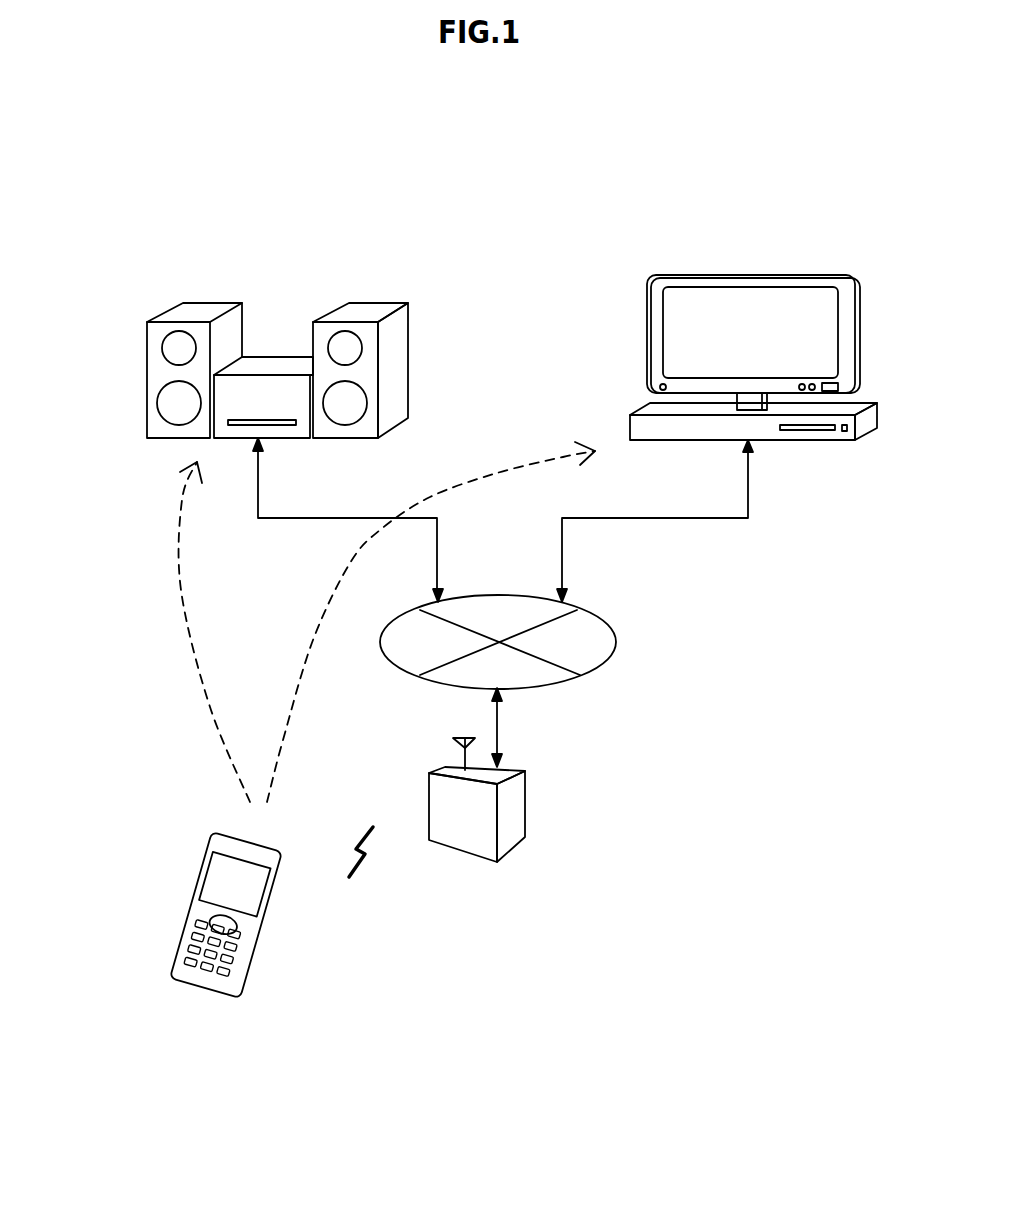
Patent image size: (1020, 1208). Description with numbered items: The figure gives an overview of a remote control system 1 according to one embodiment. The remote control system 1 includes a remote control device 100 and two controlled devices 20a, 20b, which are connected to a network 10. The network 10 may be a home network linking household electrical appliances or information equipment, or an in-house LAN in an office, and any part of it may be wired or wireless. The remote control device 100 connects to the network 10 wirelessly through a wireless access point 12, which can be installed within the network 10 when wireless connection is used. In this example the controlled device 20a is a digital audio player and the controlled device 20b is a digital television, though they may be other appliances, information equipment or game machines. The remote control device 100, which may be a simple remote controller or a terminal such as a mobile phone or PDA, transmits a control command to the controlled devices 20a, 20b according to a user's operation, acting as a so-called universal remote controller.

The remote control system 1 is at (593, 218).
The network 10 is at (602, 618).
The wireless access point 12 is at (530, 782).
The controlled device 20a is at (380, 303).
The controlled device 20b is at (810, 275).
The remote control device 100 is at (238, 840).